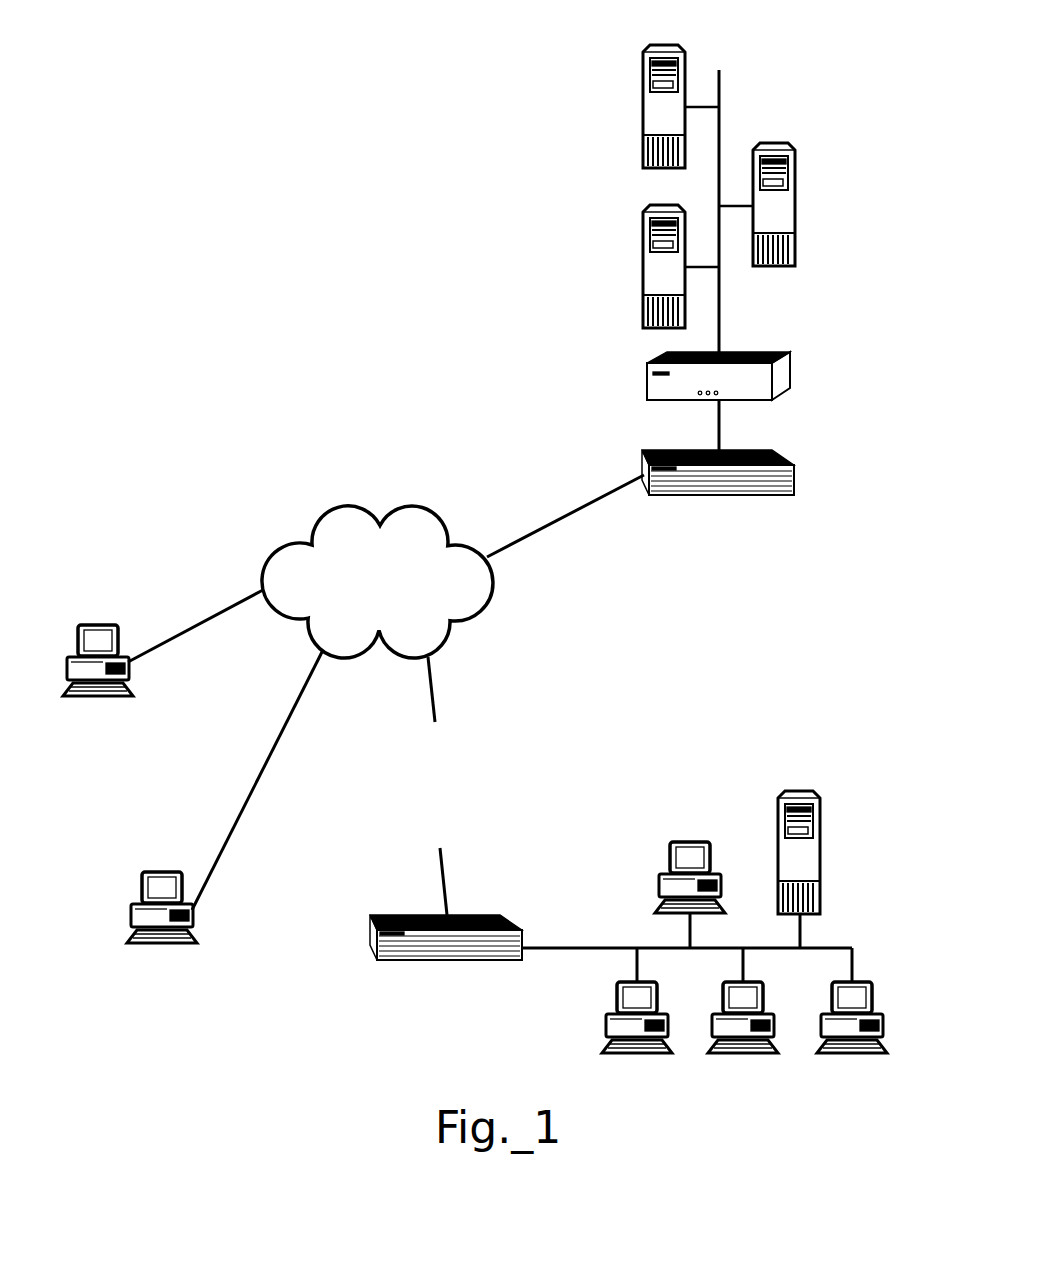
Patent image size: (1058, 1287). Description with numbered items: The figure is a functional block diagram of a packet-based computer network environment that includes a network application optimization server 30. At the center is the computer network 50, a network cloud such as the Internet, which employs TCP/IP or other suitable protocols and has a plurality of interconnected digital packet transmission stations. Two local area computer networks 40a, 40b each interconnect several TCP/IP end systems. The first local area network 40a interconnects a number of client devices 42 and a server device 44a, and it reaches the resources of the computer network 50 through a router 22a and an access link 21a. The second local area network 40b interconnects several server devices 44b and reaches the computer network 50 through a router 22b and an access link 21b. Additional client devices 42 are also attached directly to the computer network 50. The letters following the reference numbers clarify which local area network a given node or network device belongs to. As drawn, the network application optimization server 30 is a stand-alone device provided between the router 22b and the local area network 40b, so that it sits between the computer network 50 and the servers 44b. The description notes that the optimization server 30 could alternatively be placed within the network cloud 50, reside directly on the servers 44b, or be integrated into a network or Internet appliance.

The access link 21a is at (442, 748).
The access link 21b is at (582, 510).
The router 22a is at (483, 917).
The router 22b is at (755, 497).
The network application optimization server 30 is at (753, 398).
The local area computer network 40a is at (610, 899).
The local area computer network 40b is at (737, 66).
The client device 42 is at (115, 700).
The server device 44a is at (777, 852).
The server device 44b is at (642, 107).
The computer network 50 is at (432, 508).